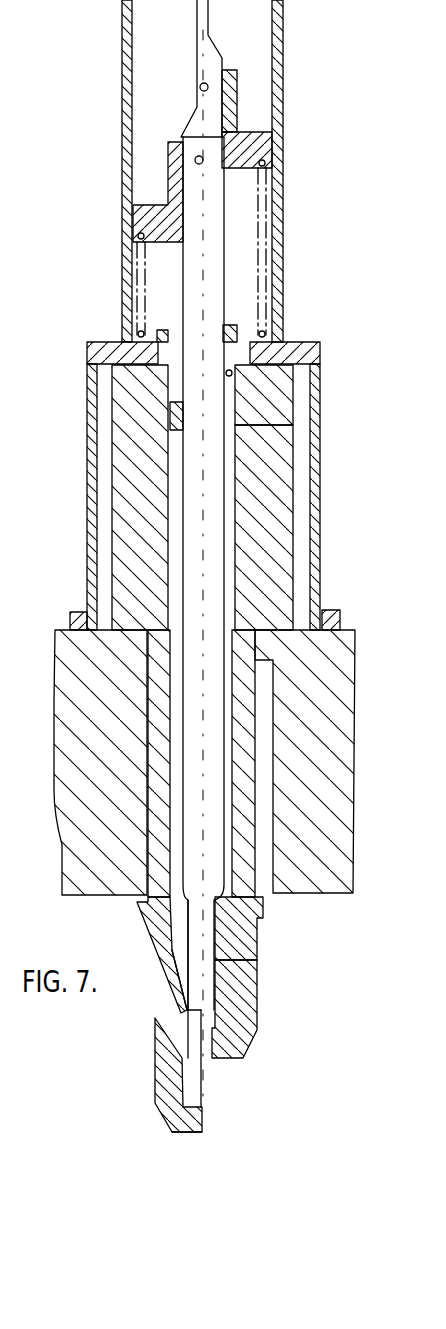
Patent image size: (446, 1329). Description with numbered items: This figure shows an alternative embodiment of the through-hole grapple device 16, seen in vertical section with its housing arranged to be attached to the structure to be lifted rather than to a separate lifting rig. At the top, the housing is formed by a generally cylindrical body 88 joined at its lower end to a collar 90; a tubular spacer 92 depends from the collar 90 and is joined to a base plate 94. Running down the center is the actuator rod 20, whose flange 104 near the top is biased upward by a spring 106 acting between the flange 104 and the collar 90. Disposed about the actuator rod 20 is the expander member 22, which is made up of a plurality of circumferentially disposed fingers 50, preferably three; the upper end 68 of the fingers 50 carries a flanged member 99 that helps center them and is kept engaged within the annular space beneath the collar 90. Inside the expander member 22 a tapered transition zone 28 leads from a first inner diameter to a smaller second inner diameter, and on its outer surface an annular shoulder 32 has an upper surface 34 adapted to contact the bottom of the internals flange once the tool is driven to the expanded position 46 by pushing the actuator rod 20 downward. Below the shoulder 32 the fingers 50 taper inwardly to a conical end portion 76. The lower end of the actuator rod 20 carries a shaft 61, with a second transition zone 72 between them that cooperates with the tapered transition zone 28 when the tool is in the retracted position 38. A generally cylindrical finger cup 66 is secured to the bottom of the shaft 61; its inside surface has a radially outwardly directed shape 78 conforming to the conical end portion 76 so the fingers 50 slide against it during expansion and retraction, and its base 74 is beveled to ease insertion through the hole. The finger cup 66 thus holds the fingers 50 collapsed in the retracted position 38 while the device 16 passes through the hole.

The through-hole grapple device 16 is at (118, 38).
The cylindrical body 88 is at (284, 90).
The flange 104 is at (267, 139).
The spring 106 is at (262, 214).
The collar 90 is at (300, 342).
The upper end 68 is at (290, 380).
The tubular spacer 92 is at (90, 398).
The flanged member 99 is at (113, 455).
The fingers 50 is at (300, 500).
The actuator rod 20 is at (186, 518).
The base plate 94 is at (76, 612).
The expander member 22 is at (246, 727).
The annular shoulder 32 is at (130, 905).
The tapered transition zone 28 is at (187, 897).
The upper surface 34 is at (268, 897).
The expanded position 46 is at (75, 1031).
The finger cup 66 is at (260, 993).
The conical end portion 76 is at (164, 980).
The retracted position 38 is at (325, 1024).
The second transition zone 72 is at (200, 1005).
The radially outwardly directed shape 78 is at (158, 1060).
The shaft 61 is at (203, 1072).
The base 74 is at (193, 1133).